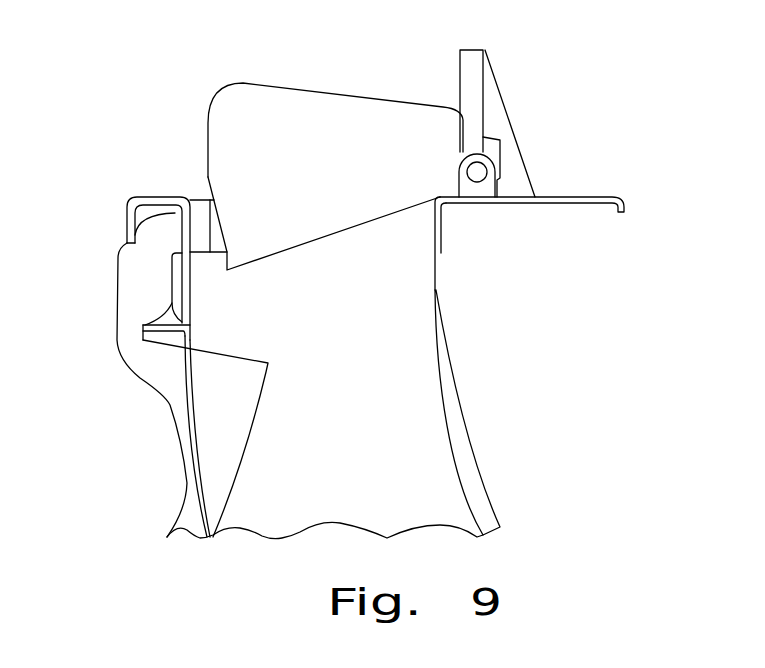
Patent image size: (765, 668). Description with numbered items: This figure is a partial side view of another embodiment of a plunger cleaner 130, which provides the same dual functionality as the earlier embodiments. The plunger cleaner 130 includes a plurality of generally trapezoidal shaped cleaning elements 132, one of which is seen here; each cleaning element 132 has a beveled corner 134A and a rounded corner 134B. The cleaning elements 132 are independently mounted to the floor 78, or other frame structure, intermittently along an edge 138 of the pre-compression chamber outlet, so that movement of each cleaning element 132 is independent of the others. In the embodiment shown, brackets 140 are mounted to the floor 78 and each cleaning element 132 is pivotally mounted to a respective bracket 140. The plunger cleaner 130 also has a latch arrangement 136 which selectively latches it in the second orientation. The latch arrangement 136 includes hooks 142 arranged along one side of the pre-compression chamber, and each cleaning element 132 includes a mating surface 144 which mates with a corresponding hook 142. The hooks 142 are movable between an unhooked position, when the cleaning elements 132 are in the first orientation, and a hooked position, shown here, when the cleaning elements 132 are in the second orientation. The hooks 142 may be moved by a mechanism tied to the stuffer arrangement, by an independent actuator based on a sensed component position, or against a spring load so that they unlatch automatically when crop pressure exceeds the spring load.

The floor 78 is at (590, 196).
The plunger cleaner 130 is at (183, 88).
The cleaning element 132 is at (367, 97).
The beveled corner 134A is at (488, 132).
The rounded corner 134B is at (227, 90).
The latch arrangement 136 is at (195, 178).
The edge 138 is at (183, 398).
The bracket 140 is at (475, 190).
The hook 142 is at (118, 300).
The mating surface 144 is at (222, 248).